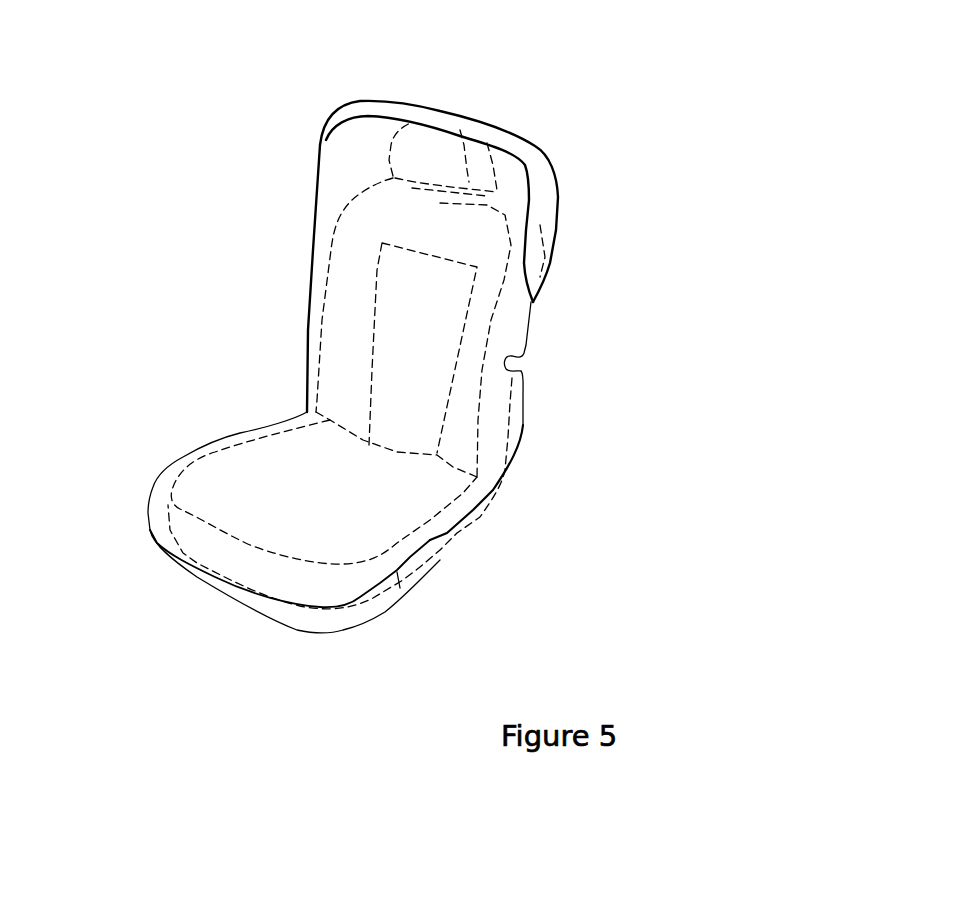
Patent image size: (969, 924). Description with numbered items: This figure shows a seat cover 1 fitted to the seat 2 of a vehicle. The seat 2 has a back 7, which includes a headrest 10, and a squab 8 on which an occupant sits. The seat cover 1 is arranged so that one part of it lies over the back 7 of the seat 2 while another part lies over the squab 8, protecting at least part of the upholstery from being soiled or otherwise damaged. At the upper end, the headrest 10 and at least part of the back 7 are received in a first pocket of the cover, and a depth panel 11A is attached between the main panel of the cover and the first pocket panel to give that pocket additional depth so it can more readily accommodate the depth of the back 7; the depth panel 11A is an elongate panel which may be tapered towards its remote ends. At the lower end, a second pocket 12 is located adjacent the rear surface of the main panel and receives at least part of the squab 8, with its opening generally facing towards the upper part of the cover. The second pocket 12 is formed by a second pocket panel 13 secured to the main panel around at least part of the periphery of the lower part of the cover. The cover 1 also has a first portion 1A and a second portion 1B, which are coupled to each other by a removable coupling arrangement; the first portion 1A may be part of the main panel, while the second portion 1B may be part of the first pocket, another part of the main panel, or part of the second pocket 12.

The seat cover 1 is at (313, 410).
The first portion 1A is at (515, 383).
The second portion 1B is at (525, 345).
The seat 2 is at (489, 510).
The back 7 is at (423, 325).
The squab 8 is at (312, 500).
The headrest 10 is at (435, 155).
The depth panel 11A is at (535, 175).
The second pocket 12 is at (371, 609).
The second pocket panel 13 is at (318, 631).